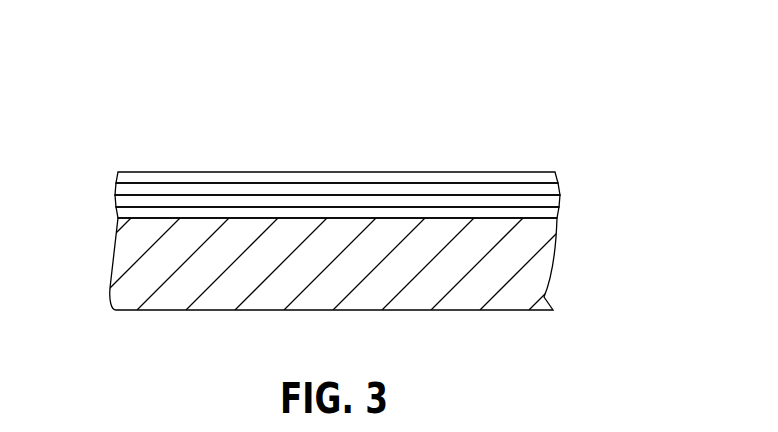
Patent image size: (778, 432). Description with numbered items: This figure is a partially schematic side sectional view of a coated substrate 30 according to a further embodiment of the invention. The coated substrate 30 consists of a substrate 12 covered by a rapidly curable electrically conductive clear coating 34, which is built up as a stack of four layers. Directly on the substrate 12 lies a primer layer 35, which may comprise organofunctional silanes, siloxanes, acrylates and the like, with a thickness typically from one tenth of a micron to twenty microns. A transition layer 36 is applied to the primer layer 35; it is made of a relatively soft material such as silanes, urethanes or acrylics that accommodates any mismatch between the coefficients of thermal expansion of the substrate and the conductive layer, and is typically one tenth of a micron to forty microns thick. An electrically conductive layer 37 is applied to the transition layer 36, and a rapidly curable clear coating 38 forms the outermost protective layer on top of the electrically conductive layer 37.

The coated substrate 30 is at (165, 105).
The rapidly curable electrically conductive clear coating 34 is at (112, 172).
The rapidly curable clear coating 38 is at (558, 174).
The electrically conductive layer 37 is at (560, 188).
The transition layer 36 is at (560, 202).
The primer layer 35 is at (559, 211).
The substrate 12 is at (547, 260).